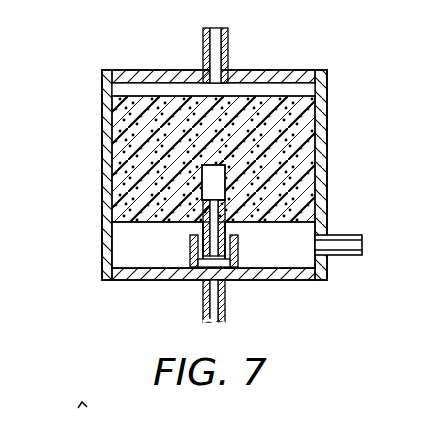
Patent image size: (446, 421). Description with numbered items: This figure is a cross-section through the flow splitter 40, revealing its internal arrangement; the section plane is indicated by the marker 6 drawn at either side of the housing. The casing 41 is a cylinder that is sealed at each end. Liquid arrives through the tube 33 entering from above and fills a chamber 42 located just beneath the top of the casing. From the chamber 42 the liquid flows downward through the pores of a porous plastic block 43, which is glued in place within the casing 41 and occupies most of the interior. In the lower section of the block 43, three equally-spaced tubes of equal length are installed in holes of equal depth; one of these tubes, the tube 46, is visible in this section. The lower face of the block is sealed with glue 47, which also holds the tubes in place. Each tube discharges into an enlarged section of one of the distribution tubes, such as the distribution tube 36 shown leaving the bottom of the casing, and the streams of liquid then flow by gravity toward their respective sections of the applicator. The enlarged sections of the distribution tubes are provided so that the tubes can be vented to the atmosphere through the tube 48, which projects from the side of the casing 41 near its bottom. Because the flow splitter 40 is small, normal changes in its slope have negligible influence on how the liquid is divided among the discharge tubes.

The flow splitter 40 is at (305, 52).
The casing 41 is at (327, 152).
The chamber 42 is at (297, 88).
The porous plastic block 43 is at (310, 125).
The tube 46 is at (190, 224).
The glue 47 is at (146, 224).
The tube 33 is at (228, 42).
The distribution tube 36 is at (225, 311).
The tube 48 is at (350, 258).
The section line 6- 6 is at (233, 216).